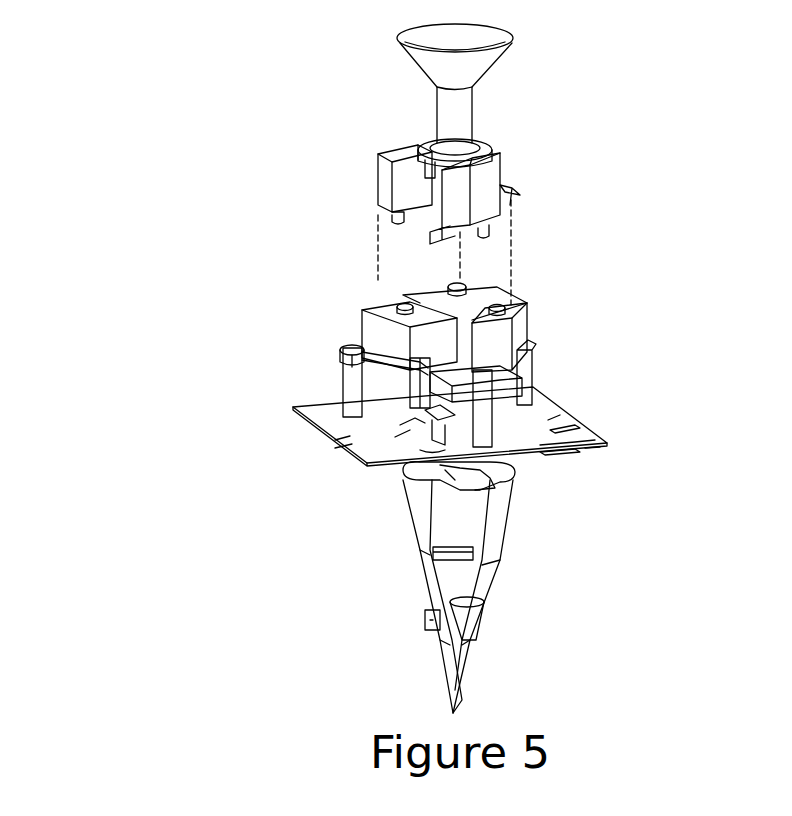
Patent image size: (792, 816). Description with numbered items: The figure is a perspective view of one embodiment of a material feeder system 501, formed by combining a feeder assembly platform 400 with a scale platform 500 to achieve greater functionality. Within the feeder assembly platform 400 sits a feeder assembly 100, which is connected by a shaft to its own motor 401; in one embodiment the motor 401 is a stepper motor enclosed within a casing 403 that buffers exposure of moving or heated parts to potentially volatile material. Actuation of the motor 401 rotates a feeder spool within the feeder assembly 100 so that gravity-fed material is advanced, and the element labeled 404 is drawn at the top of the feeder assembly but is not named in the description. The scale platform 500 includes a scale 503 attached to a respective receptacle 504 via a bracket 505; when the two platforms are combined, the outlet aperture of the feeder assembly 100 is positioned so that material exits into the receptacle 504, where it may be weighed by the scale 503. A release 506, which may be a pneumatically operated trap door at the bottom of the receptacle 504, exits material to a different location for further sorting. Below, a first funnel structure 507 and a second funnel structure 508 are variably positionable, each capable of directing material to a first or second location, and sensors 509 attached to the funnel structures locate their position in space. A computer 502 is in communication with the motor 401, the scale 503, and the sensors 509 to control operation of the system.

The feeder assembly 100 is at (421, 143).
The feeder assembly platform 400 is at (258, 18).
The motor 401 is at (518, 202).
The casing 403 is at (508, 141).
The funnel 404 is at (470, 124).
The scale platform 500 is at (242, 275).
The material feeder system 501 is at (152, 15).
The computer 502 is at (633, 257).
The scale 503 is at (372, 325).
The receptacle 504 is at (395, 420).
The bracket 505 is at (380, 408).
The release 506 is at (407, 437).
The first funnel structure 507 is at (483, 525).
The second funnel structure 508 is at (513, 462).
The sensor 509 is at (567, 460).